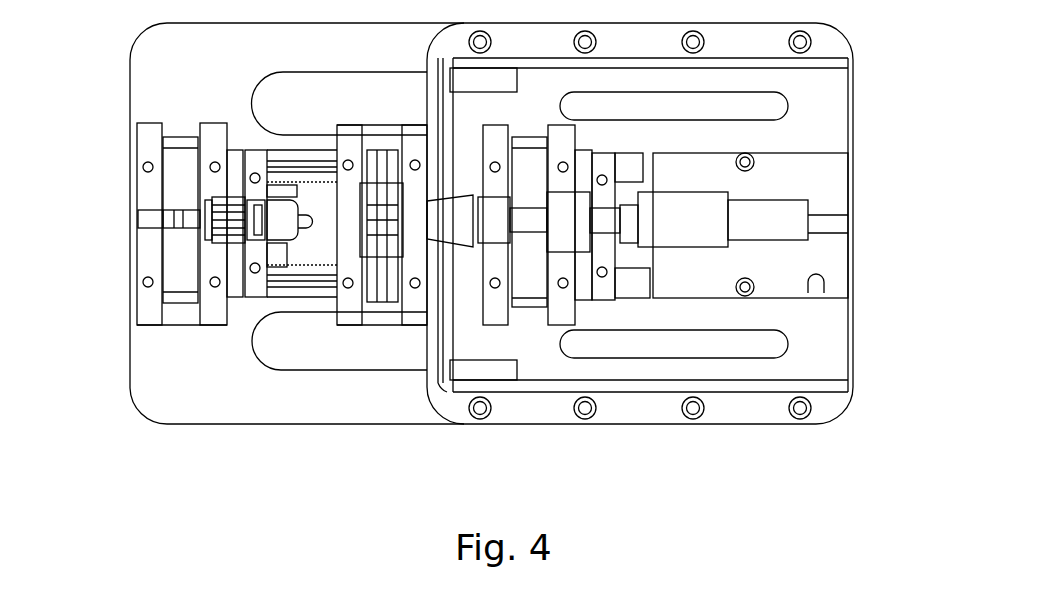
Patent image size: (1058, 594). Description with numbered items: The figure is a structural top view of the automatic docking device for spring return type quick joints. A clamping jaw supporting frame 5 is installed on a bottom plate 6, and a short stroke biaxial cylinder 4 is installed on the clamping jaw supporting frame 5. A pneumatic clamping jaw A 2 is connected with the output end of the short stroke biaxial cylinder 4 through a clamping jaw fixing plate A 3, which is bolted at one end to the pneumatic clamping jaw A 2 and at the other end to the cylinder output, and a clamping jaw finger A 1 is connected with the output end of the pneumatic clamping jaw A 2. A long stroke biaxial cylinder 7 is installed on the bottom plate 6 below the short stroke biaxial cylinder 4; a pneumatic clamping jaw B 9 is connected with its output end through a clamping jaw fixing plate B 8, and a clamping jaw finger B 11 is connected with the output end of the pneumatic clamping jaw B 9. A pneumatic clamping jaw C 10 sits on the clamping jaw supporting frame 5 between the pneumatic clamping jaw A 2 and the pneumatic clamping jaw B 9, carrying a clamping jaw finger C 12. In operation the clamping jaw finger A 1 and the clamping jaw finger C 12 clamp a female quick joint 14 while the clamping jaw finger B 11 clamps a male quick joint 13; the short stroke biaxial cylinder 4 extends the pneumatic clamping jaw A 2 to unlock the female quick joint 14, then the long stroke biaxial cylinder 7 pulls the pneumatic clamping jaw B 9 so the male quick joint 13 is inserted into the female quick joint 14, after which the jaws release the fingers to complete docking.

The clamping jaw finger A 1 is at (530, 178).
The pneumatic clamping jaw A 2 is at (562, 178).
The clamping jaw fixing plate A 3 is at (582, 260).
The short stroke biaxial cylinder 4 is at (768, 262).
The clamping jaw supporting frame 5 is at (815, 340).
The bottom plate 6 is at (395, 400).
The long stroke biaxial cylinder 7 is at (292, 255).
The clamping jaw fixing plate B 8 is at (233, 270).
The pneumatic clamping jaw B 9 is at (148, 300).
The pneumatic clamping jaw C 10 is at (345, 218).
The clamping jaw finger B 11 is at (175, 250).
The clamping jaw finger C 12 is at (167, 217).
The male quick joint 13 is at (230, 205).
The female quick joint 14 is at (470, 208).